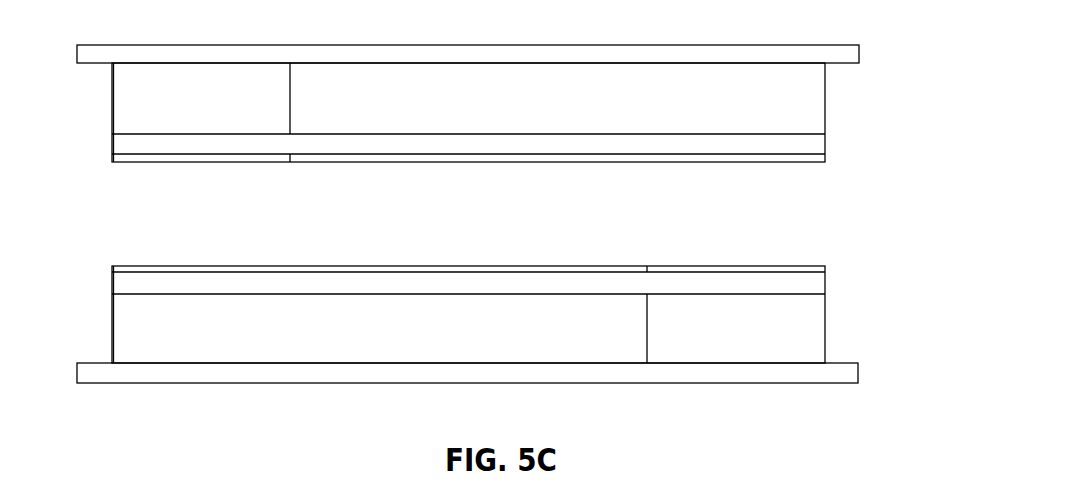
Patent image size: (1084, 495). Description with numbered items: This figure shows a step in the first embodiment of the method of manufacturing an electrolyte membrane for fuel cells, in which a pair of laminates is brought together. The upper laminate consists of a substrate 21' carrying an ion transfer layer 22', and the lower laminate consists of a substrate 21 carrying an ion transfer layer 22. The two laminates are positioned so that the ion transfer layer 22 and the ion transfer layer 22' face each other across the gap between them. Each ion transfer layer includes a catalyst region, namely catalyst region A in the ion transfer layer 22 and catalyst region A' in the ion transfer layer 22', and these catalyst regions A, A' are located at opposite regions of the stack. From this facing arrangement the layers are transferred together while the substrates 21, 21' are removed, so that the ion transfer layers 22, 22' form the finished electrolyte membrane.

The substrate 21' is at (509, 54).
The ion transfer layer 22' is at (534, 113).
The catalyst region A' is at (169, 112).
The substrate 21 is at (507, 374).
The ion transfer layer 22 is at (528, 310).
The catalyst region A is at (777, 314).